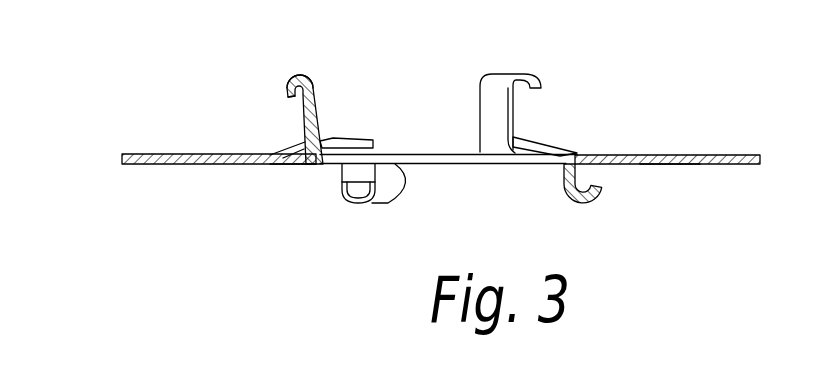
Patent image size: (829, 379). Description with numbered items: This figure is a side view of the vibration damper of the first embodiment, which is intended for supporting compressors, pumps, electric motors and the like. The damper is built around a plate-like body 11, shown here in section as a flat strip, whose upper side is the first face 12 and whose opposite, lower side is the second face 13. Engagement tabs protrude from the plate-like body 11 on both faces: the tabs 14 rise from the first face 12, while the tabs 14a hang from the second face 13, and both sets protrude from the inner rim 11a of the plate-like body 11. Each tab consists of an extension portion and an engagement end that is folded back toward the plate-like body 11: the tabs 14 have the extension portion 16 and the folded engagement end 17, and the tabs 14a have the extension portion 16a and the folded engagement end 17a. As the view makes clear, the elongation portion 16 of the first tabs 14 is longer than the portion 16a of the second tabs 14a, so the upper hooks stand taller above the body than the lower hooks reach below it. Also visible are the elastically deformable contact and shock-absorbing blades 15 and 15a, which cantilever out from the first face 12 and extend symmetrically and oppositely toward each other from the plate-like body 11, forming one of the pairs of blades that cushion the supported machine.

The plate-like body 11 is at (112, 159).
The inner rim 11a is at (325, 166).
The first face 12 is at (648, 154).
The second face 13 is at (665, 166).
The engagement tabs 14 is at (324, 90).
The engagement tabs 14a is at (378, 208).
The blade 15 is at (357, 138).
The blade 15a is at (536, 139).
The extension portion 16 is at (292, 107).
The extension portion 16a is at (562, 178).
The engagement end 17 is at (300, 73).
The engagement end 17a is at (341, 199).